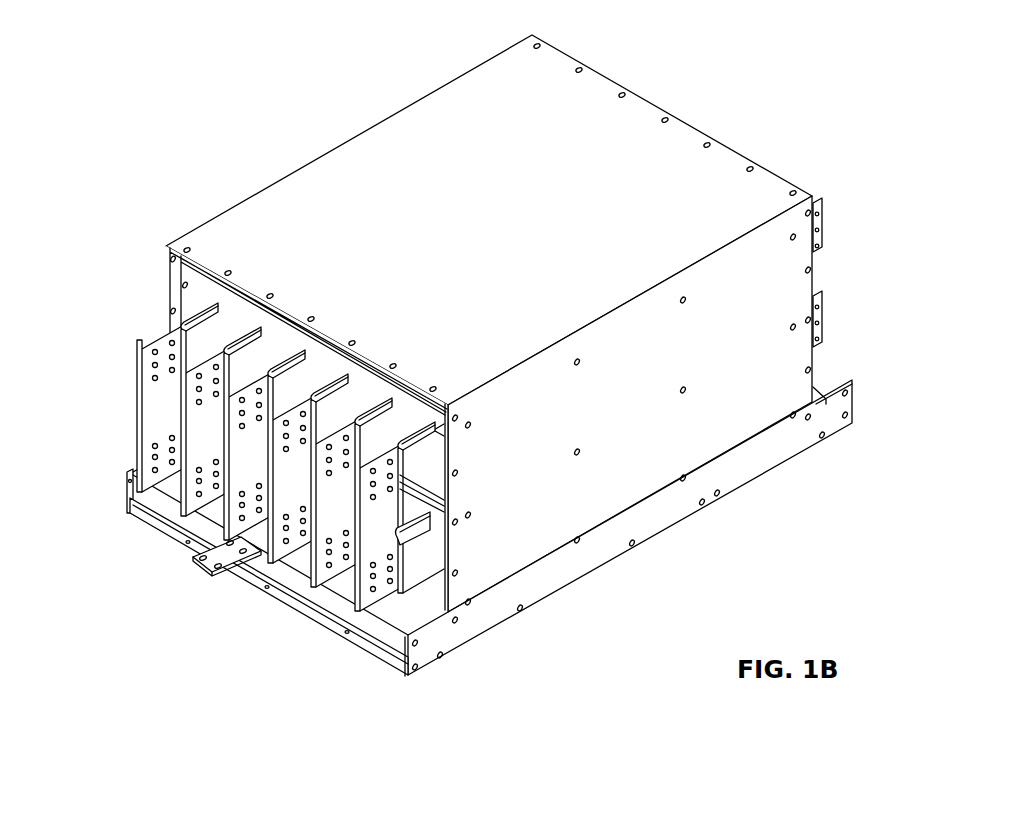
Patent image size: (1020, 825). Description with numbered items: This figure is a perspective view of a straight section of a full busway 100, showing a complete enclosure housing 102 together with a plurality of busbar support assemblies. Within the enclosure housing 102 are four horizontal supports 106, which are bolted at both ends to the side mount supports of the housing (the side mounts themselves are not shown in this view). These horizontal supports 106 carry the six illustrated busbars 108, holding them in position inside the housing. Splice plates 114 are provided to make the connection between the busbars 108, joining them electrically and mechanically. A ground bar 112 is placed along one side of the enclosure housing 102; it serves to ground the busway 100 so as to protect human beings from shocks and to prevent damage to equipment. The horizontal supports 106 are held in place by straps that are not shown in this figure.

The full busway 100 is at (454, 358).
The enclosure housing 102 is at (237, 205).
The horizontal supports 106 is at (181, 292).
The busbars 108 is at (413, 557).
The ground bar 112 is at (200, 574).
The splice plates 114 is at (136, 420).